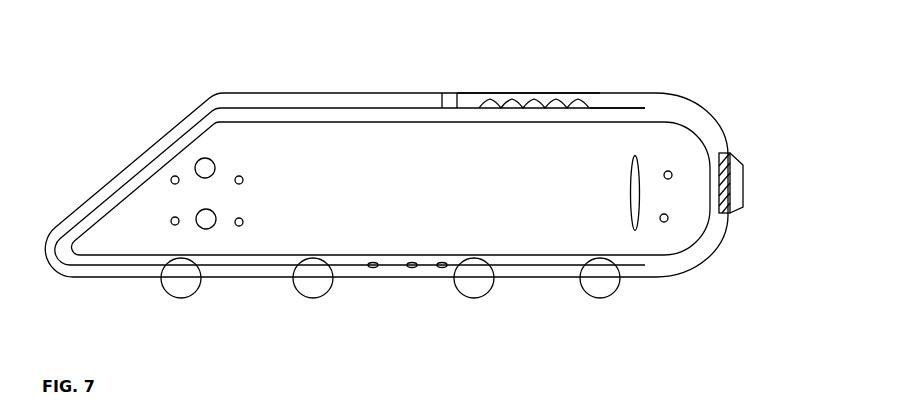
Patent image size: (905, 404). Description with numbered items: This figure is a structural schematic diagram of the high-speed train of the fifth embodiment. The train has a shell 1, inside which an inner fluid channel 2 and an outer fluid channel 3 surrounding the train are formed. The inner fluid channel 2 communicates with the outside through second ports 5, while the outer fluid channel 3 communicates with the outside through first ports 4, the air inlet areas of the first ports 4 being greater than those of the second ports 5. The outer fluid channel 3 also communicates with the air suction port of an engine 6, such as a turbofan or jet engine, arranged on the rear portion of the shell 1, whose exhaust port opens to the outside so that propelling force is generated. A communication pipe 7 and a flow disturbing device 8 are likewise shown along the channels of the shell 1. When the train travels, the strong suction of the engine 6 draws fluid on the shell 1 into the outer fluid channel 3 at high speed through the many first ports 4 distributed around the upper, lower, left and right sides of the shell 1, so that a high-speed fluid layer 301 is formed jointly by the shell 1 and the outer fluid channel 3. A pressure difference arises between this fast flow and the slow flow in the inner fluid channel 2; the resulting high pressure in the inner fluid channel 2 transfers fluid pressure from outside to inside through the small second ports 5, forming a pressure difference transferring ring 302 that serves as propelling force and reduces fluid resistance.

The shell 1 is at (290, 93).
The inner fluid channel 2 is at (385, 117).
The outer fluid channel 3 is at (345, 102).
The high-speed fluid layer 301 is at (503, 93).
The pressure difference transferring ring 302 is at (613, 108).
The first port 4 is at (205, 227).
The second port 5 is at (172, 223).
The engine 6 is at (730, 153).
The communication pipe 7 is at (448, 98).
The flow disturbing device 8 is at (557, 100).